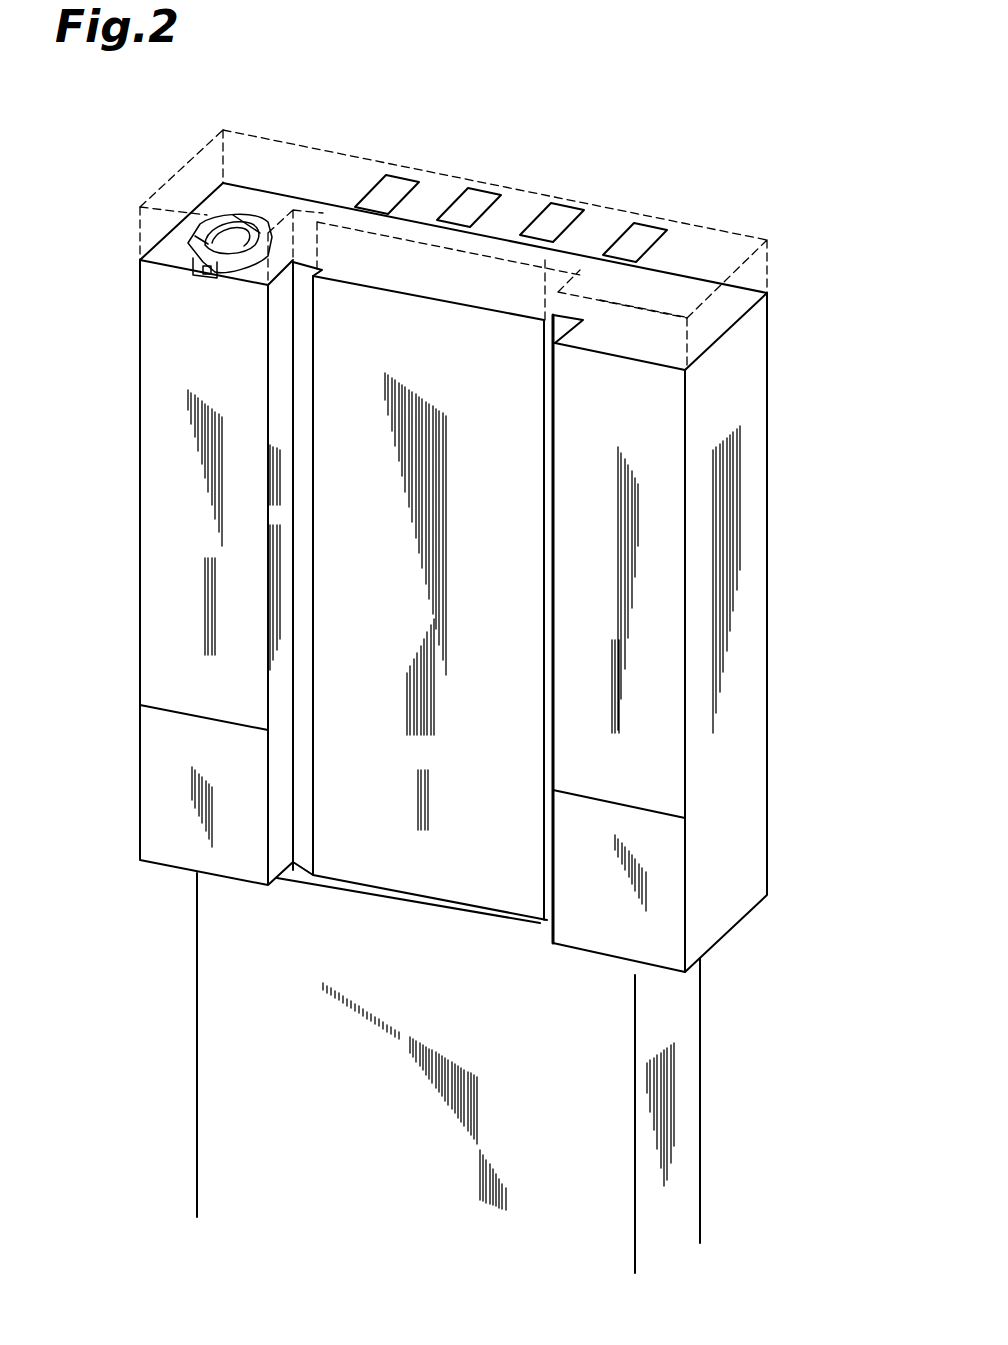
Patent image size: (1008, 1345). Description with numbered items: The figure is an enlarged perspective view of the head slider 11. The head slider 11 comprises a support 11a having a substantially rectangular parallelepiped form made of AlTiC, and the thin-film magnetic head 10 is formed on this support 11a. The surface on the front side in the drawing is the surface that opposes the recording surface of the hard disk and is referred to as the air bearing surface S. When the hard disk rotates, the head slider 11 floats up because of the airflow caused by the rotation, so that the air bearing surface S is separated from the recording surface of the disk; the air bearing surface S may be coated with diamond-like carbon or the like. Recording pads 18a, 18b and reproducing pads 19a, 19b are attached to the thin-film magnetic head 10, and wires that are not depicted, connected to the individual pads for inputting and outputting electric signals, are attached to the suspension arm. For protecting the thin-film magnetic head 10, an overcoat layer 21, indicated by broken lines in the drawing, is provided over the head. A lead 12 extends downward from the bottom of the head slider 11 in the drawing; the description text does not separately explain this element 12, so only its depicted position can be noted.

The thin-film magnetic head 10 is at (196, 184).
The head slider 11 is at (803, 443).
The support 11a is at (742, 625).
The lead 12 is at (685, 1016).
The recording pad 18a is at (560, 215).
The recording pad 18b is at (645, 230).
The reproducing pad 19a is at (397, 188).
The reproducing pad 19b is at (478, 197).
The overcoat layer 21 is at (685, 240).
The air bearing surface S is at (168, 475).